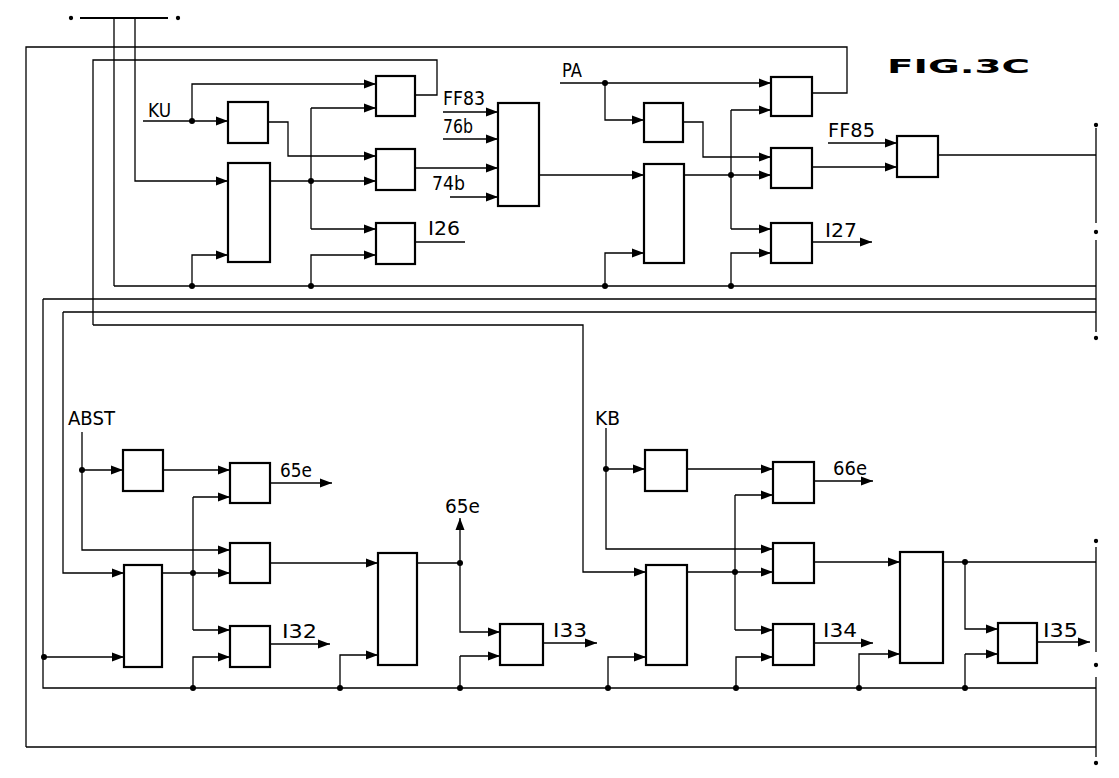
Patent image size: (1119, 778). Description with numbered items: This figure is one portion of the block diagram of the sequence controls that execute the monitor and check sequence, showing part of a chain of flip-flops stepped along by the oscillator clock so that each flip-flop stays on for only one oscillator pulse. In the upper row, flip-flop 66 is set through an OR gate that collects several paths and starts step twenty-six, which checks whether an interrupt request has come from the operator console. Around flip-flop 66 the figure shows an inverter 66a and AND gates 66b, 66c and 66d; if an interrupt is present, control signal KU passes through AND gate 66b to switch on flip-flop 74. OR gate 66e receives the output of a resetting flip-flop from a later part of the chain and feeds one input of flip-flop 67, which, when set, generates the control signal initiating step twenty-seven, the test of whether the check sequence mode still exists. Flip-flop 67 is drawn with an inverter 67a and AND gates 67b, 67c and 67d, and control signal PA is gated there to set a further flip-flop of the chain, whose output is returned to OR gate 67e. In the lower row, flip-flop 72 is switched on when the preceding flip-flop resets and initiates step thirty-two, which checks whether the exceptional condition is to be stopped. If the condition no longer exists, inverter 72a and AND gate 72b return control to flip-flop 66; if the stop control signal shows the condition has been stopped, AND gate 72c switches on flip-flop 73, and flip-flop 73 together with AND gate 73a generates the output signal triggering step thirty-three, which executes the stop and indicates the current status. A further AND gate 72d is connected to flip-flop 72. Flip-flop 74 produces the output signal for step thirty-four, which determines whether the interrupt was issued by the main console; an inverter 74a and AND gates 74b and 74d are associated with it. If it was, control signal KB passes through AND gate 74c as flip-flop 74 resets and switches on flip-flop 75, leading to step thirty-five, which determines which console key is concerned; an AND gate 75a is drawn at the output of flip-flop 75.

The flip-flop 66 is at (230, 207).
The inverter 66a is at (228, 133).
The AND gate 66b is at (387, 112).
The AND gate 66c is at (388, 183).
The AND gate 66d is at (417, 253).
The OR gate 66e is at (520, 204).
The flip-flop 67 is at (645, 198).
The inverter 67a is at (643, 133).
The AND gate 67b is at (797, 112).
The AND gate 67c is at (808, 180).
The AND gate 67d is at (818, 253).
The OR gate 67e is at (925, 140).
The flip-flop 72 is at (128, 605).
The inverter 72a is at (145, 482).
The AND gate 72b is at (250, 463).
The AND gate 72c is at (260, 538).
The AND gate 72d is at (252, 627).
The flip-flop 73 is at (395, 555).
The AND gate 73a is at (518, 623).
The flip-flop 74 is at (650, 582).
The inverter 74a is at (666, 488).
The AND gate 74b is at (788, 462).
The AND gate 74c is at (807, 544).
The AND gate 74d is at (791, 625).
The flip-flop 75 is at (925, 560).
The AND gate 75a is at (1018, 623).